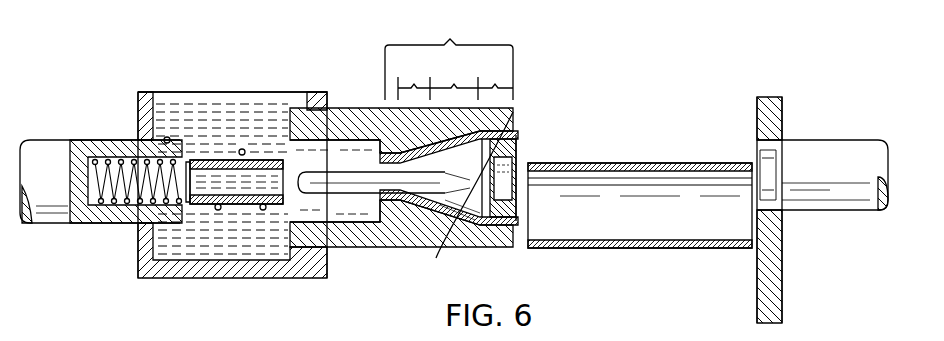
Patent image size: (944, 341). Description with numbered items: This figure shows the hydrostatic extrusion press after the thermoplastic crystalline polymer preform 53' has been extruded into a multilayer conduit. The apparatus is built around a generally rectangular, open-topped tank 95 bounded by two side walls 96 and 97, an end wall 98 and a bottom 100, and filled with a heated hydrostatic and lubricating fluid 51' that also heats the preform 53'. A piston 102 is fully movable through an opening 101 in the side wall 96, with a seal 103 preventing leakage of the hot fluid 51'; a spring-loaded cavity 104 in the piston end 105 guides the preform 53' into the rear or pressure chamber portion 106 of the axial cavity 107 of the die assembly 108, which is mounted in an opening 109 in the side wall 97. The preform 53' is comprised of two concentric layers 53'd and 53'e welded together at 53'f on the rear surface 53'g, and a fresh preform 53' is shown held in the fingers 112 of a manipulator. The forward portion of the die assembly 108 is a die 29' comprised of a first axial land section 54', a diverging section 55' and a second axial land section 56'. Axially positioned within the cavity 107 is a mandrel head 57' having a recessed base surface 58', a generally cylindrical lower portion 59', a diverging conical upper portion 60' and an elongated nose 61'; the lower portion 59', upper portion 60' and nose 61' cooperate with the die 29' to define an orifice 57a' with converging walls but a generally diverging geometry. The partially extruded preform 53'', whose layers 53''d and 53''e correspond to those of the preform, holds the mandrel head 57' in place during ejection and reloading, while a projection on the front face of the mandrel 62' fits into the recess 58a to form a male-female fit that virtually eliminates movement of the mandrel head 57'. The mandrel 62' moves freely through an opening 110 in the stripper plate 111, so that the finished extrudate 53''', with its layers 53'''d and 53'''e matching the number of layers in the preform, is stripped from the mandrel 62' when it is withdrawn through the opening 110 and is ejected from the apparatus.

The piston 102 is at (48, 140).
The opening 101 is at (137, 223).
The seal 103 is at (143, 223).
The spring-loaded cavity 104 is at (103, 140).
The end 105 is at (167, 137).
The side wall 96 is at (138, 103).
The tank 95 is at (222, 177).
The end wall 98 is at (245, 92).
The bottom 100 is at (300, 278).
The opening 109 is at (312, 92).
The side wall 97 is at (327, 95).
The pressure chamber portion 106 is at (360, 142).
The axial cavity 107 is at (390, 196).
The die assembly 108 is at (373, 271).
The fingers 112 is at (240, 149).
The preform 53' is at (234, 167).
The hydrostatic and lubricating fluid 51' is at (237, 150).
The weld 53'f is at (205, 118).
The rear surface 53'g is at (179, 226).
The layer 53'd is at (195, 258).
The layer 53'e is at (260, 258).
The elongated nose 61' is at (384, 182).
The diverging conical upper portion 60' is at (449, 152).
The mandrel head 57' is at (449, 200).
The orifice 57a' is at (406, 249).
The partially extruded preform 53'' is at (466, 195).
The body portion 53''d is at (531, 83).
The body portion 53''e is at (549, 103).
The die 29' is at (449, 56).
The first axial land section 54' is at (414, 81).
The diverging section 55' is at (454, 79).
The second axial land section 56' is at (495, 81).
The recessed base surface 58' is at (529, 182).
The recess 58a is at (503, 183).
The cylindrical lower portion 59' is at (546, 169).
The extrudate 53''' is at (640, 189).
The tube wall 53'''d is at (607, 144).
The tube wall 53'''e is at (653, 127).
The opening 110 is at (782, 212).
The stripper plate 111 is at (770, 97).
The mandrel 62' is at (822, 175).